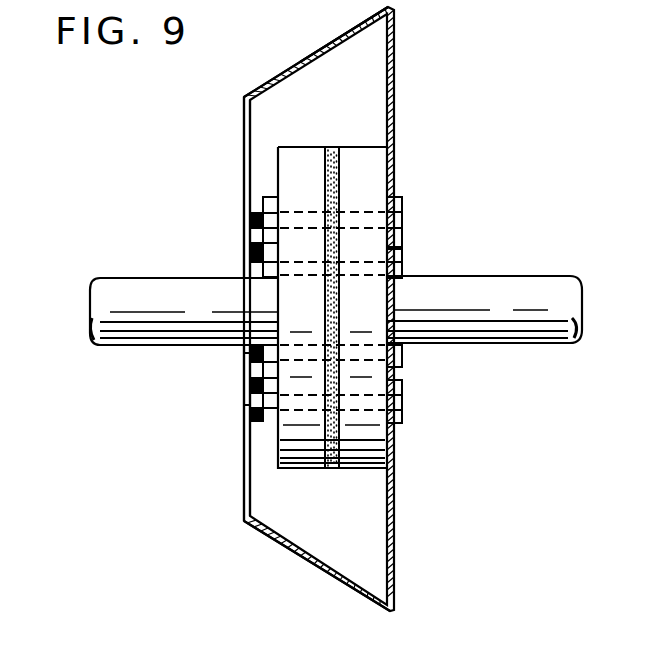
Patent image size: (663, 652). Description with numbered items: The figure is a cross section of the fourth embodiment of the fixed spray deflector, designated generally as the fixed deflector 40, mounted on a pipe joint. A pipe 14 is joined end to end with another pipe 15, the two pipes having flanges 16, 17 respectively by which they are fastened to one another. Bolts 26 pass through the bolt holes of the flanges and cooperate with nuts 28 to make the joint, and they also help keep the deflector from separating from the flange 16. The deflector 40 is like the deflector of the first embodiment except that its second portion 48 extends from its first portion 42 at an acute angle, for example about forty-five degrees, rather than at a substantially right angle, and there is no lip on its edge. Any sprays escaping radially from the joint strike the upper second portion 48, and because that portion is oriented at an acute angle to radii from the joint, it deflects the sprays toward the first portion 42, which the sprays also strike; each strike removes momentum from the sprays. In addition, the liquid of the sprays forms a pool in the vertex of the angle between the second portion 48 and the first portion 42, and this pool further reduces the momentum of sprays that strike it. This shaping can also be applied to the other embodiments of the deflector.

The pipe 14 is at (482, 282).
The pipe 15 is at (138, 287).
The flange 16 is at (374, 172).
The flange 17 is at (287, 172).
The bolts 26 is at (250, 403).
The nuts 28 is at (268, 255).
The fixed deflector 40 is at (339, 22).
The first portion 42 is at (396, 72).
The second portion 48 is at (282, 68).